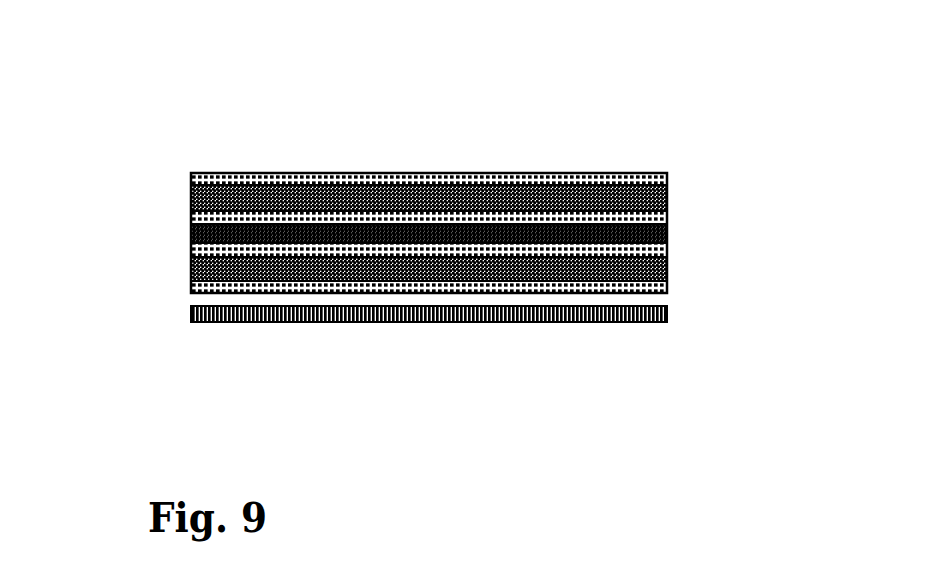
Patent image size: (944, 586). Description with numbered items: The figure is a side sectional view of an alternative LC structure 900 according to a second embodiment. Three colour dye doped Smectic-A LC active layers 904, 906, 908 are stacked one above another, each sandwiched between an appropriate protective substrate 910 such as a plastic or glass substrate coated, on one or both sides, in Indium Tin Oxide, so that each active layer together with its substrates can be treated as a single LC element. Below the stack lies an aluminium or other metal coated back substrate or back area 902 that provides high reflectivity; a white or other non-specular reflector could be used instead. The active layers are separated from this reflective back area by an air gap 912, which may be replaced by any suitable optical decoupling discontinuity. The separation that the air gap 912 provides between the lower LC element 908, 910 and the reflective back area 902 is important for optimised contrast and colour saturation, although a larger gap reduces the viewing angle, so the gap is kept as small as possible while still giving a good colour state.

The LC structure 900 is at (453, 203).
The back substrate 902 is at (684, 316).
The colour dye doped Smectic-A LC active layer 904 is at (176, 198).
The colour dye doped Smectic-A LC active layer 906 is at (176, 232).
The colour dye doped Smectic-A LC active layer 908 is at (176, 269).
The protective substrate 910 is at (672, 186).
The air gap 912 is at (682, 298).